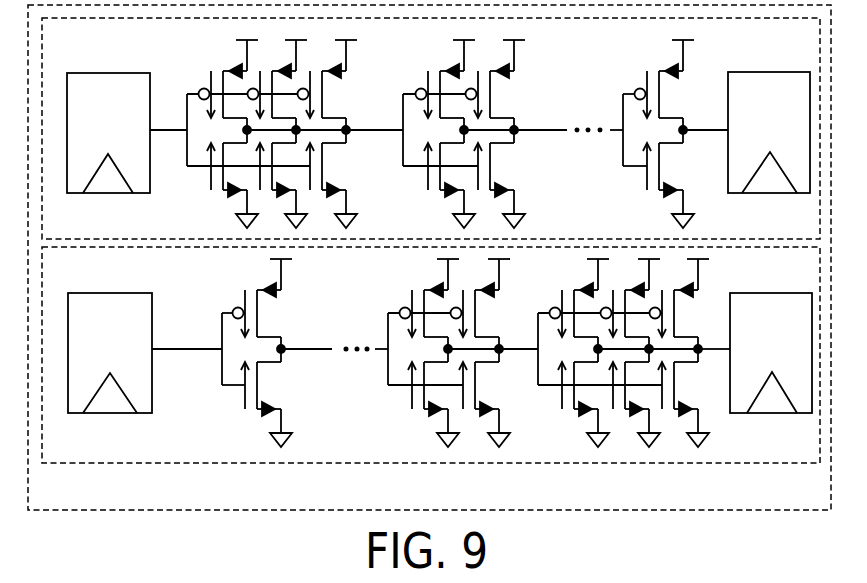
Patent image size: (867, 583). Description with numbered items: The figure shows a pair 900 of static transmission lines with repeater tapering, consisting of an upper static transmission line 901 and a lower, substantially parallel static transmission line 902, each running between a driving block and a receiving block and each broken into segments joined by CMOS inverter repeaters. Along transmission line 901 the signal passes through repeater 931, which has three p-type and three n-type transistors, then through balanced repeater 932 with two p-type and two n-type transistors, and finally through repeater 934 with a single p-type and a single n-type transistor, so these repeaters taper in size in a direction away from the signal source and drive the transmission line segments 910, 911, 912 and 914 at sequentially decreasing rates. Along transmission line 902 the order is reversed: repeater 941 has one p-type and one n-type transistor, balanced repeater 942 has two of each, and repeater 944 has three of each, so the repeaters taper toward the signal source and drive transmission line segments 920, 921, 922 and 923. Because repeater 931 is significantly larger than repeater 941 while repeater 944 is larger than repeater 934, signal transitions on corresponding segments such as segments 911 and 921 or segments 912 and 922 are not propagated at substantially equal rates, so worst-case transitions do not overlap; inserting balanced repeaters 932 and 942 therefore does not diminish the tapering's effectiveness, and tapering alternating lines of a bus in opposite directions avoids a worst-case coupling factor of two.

The pair of static transmission lines 900 is at (102, 499).
The static transmission line 901 is at (102, 57).
The static transmission line 902 is at (803, 451).
The transmission line segment 910 is at (255, 103).
The transmission line segment 911 is at (440, 103).
The transmission line segment 912 is at (555, 85).
The transmission line segment 914 is at (687, 103).
The repeater 931 is at (250, 184).
The repeater 932 is at (445, 185).
The repeater 934 is at (635, 185).
The transmission line segment 920 is at (231, 322).
The transmission line segment 921 is at (411, 322).
The transmission line segment 922 is at (608, 322).
The transmission line segment 923 is at (731, 305).
The repeater 941 is at (237, 404).
The repeater 942 is at (429, 404).
The repeater 944 is at (615, 404).